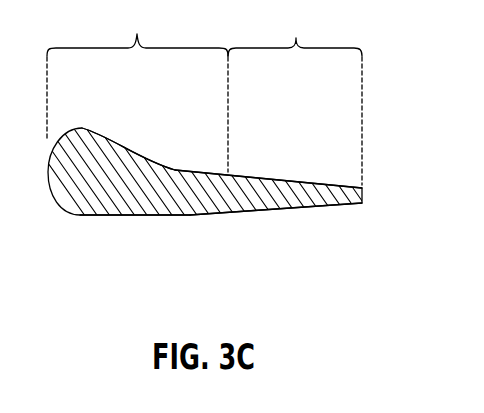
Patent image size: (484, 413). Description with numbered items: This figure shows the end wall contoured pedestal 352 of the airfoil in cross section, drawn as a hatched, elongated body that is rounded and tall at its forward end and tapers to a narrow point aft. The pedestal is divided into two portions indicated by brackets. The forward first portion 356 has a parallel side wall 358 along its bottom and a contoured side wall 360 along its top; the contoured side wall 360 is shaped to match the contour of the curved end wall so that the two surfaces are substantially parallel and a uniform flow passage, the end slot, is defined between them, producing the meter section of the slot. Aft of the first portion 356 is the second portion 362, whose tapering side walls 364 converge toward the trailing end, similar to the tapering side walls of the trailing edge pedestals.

The end wall contoured pedestal 352 is at (184, 212).
The first portion 356 is at (137, 86).
The parallel side wall 358 is at (116, 216).
The contoured side wall 360 is at (157, 166).
The second portion 362 is at (295, 92).
The tapering side walls 364 is at (284, 177).